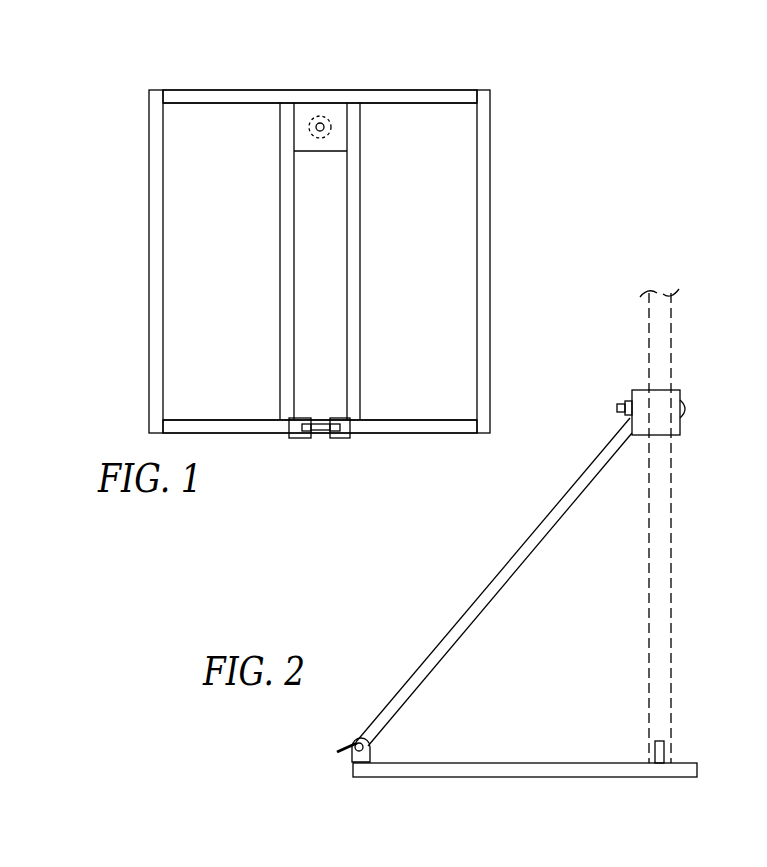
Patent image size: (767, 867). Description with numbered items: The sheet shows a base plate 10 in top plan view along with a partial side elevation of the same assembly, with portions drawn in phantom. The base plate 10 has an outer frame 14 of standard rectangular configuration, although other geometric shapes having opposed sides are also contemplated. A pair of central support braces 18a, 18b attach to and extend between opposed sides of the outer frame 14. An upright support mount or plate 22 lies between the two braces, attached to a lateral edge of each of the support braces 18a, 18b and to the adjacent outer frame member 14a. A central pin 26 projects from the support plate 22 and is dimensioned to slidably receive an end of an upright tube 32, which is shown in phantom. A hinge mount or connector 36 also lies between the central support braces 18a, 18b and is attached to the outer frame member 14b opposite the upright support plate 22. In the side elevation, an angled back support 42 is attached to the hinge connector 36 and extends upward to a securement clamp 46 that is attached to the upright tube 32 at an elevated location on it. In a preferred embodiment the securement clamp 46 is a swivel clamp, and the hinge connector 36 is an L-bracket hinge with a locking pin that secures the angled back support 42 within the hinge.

In FIG. 1, the base plate 10 is at (118, 70).
In FIG. 1, the outer frame 14 is at (148, 170).
In FIG. 2, the outer frame 14 is at (543, 781).
In FIG. 1, the outer frame member 14a is at (405, 97).
In FIG. 1, the outer frame member 14b is at (393, 425).
In FIG. 1, the central support brace 18a is at (280, 237).
In FIG. 1, the central support brace 18b is at (360, 237).
In FIG. 1, the upright support mount 22 is at (302, 111).
In FIG. 1, the central pin 26 is at (320, 116).
In FIG. 2, the central pin 26 is at (662, 746).
In FIG. 1, the upright tube 32 is at (333, 127).
In FIG. 2, the upright tube 32 is at (652, 525).
In FIG. 1, the hinge connector 36 is at (317, 438).
In FIG. 2, the hinge connector 36 is at (356, 740).
In FIG. 2, the angled back support 42 is at (502, 572).
In FIG. 2, the securement clamp 46 is at (642, 400).